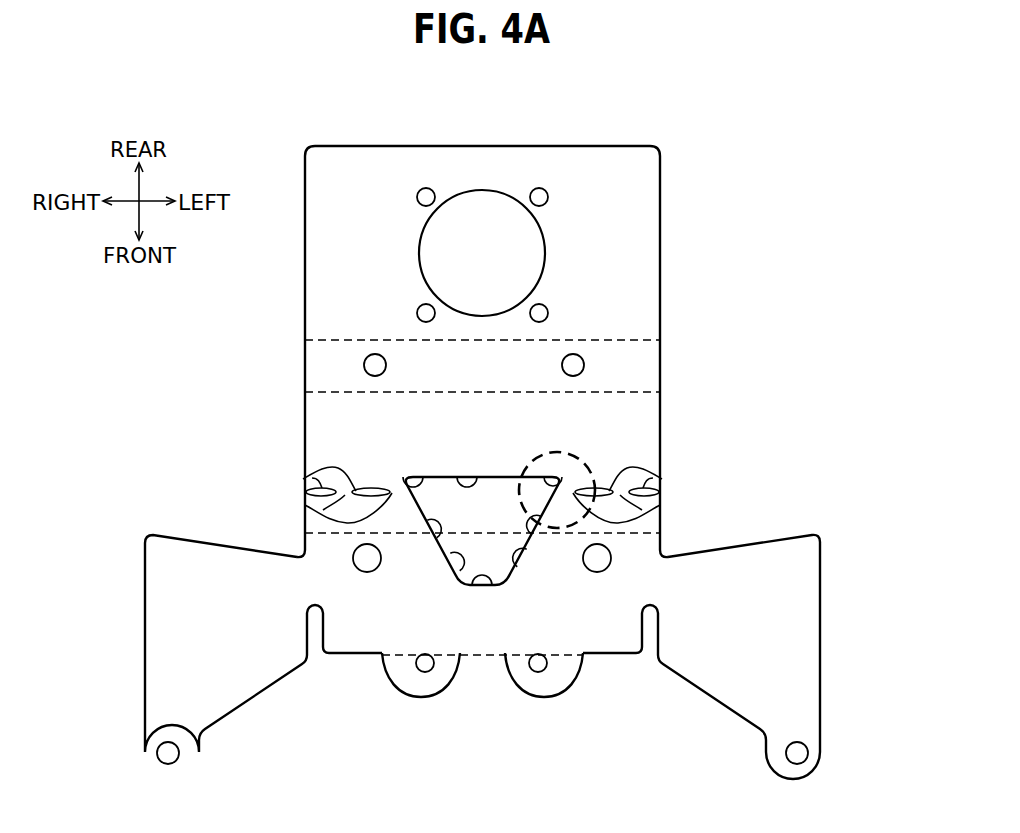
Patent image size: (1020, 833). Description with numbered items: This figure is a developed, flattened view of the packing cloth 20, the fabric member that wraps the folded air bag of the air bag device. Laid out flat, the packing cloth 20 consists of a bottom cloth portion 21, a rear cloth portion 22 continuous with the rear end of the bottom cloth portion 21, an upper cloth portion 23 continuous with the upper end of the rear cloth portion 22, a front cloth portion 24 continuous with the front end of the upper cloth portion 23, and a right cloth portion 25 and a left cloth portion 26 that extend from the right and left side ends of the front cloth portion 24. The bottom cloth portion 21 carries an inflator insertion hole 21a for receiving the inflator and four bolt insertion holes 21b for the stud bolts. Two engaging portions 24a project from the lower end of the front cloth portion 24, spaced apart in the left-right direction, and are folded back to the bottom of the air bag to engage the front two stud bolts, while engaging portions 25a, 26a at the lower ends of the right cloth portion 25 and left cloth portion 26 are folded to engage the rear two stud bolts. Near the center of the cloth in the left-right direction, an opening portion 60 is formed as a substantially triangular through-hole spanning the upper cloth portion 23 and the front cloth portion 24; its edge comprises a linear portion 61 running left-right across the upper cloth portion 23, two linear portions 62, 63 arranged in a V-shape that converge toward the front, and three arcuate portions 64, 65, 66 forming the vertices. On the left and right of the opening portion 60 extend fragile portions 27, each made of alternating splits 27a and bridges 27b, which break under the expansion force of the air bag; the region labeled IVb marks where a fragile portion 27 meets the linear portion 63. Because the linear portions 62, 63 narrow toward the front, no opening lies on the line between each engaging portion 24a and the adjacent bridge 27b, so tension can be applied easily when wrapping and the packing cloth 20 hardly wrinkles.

The packing cloth 20 is at (410, 128).
The bottom cloth portion 21 is at (650, 235).
The inflator insertion hole 21a is at (420, 269).
The bolt insertion holes 21b is at (542, 190).
The rear cloth portion 22 is at (650, 363).
The upper cloth portion 23 is at (650, 435).
The front cloth portion 24 is at (605, 625).
The engaging portions 24a is at (537, 692).
The right cloth portion 25 is at (148, 636).
The engaging portion 25a is at (154, 751).
The left cloth portion 26 is at (810, 637).
The engaging portion 26a is at (808, 752).
The fragile portions 27 is at (232, 457).
The splits 27a is at (312, 478).
The bridges 27b is at (305, 505).
The opening portion 60 is at (455, 586).
The linear portion 61 is at (465, 476).
The linear portion 62 is at (432, 538).
The linear portion 63 is at (523, 558).
The arcuate portion 64 is at (413, 476).
The arcuate portion 65 is at (553, 476).
The arcuate portion 66 is at (483, 590).
The IVb portion IVb is at (538, 447).